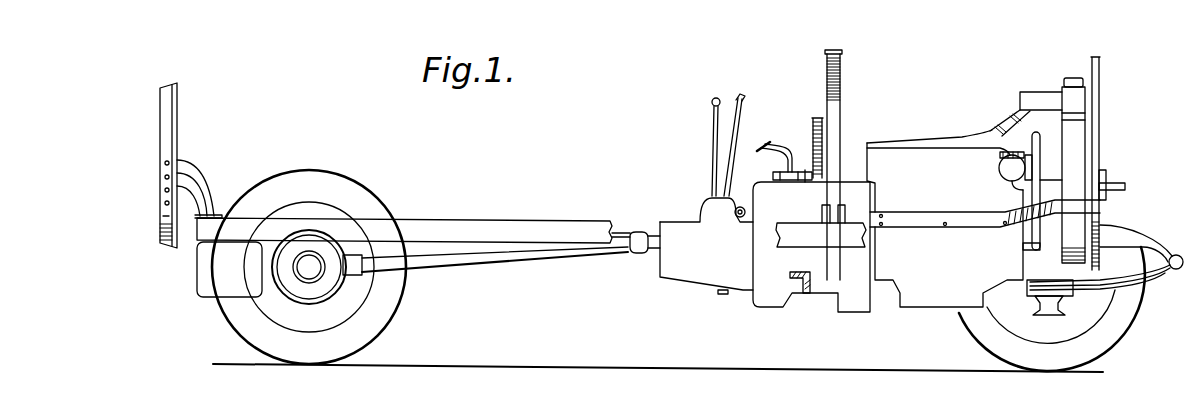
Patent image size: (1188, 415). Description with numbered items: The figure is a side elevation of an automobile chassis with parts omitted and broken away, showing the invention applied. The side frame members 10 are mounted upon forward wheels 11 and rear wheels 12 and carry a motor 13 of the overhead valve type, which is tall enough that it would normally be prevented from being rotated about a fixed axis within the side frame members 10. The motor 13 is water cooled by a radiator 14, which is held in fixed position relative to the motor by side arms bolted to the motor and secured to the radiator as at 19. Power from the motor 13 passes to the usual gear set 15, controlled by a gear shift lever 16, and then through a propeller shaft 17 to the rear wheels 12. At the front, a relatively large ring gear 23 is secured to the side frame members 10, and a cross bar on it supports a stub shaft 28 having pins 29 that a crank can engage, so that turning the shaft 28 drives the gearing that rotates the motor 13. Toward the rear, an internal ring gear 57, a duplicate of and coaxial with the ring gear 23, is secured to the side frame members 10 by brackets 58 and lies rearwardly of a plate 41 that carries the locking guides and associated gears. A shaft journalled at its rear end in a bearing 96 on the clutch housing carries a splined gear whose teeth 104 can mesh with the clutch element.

The side frame members 10 is at (584, 221).
The forward wheels 11 is at (992, 341).
The rear wheels 12 is at (388, 302).
The motor 13 is at (927, 170).
The radiator 14 is at (1072, 127).
The gear set 15 is at (706, 246).
The gear shift lever 16 is at (712, 126).
The propeller shaft 17 is at (652, 256).
The bolted connection 19 is at (1082, 215).
The ring gear 23 is at (1095, 57).
The stub shaft 28 is at (1120, 182).
The pins 29 is at (1106, 173).
The plate 41 is at (838, 303).
The internal ring gear 57 is at (840, 54).
The brackets 58 is at (824, 221).
The bearing 96 is at (777, 183).
The teeth 104 is at (818, 119).